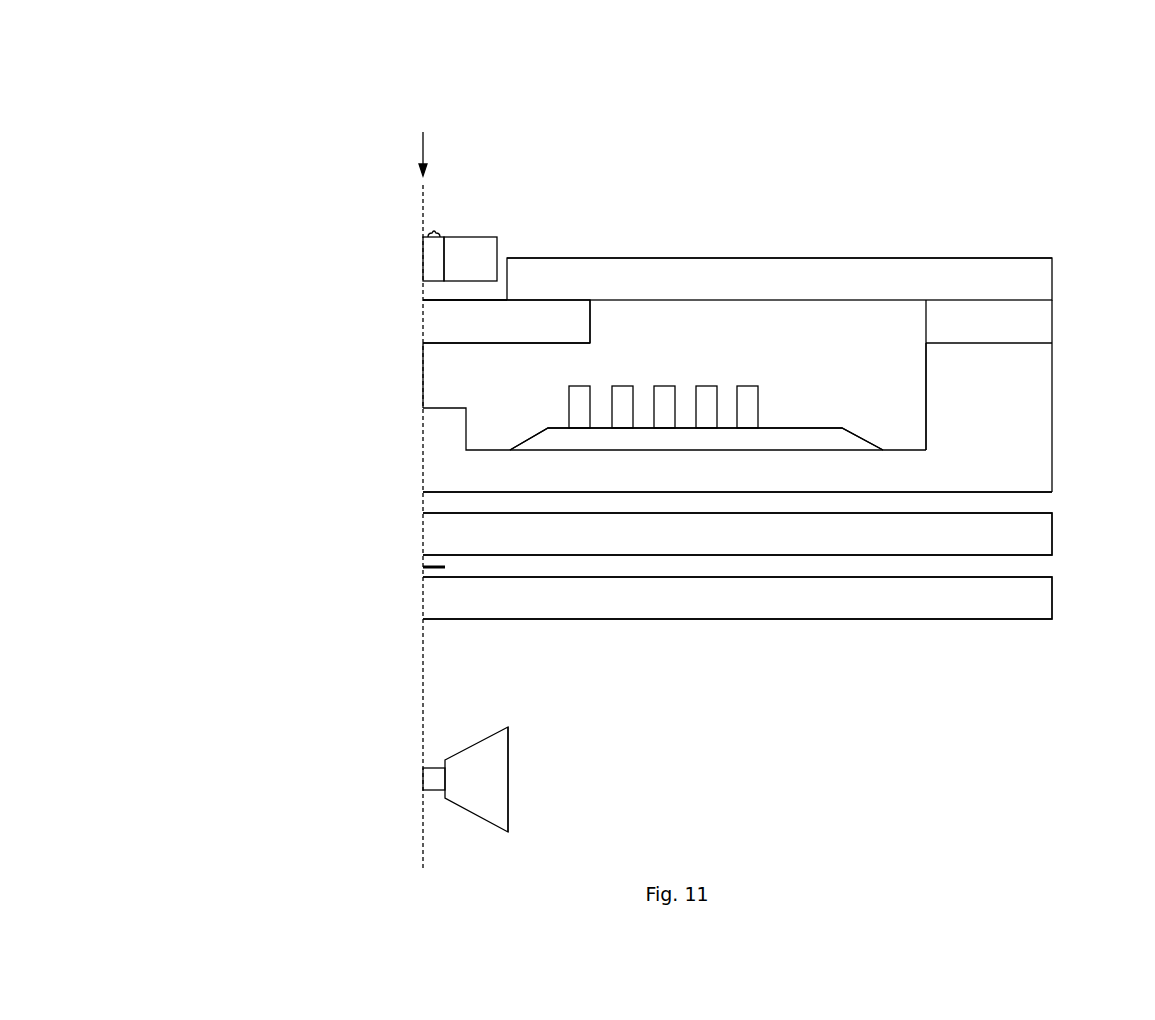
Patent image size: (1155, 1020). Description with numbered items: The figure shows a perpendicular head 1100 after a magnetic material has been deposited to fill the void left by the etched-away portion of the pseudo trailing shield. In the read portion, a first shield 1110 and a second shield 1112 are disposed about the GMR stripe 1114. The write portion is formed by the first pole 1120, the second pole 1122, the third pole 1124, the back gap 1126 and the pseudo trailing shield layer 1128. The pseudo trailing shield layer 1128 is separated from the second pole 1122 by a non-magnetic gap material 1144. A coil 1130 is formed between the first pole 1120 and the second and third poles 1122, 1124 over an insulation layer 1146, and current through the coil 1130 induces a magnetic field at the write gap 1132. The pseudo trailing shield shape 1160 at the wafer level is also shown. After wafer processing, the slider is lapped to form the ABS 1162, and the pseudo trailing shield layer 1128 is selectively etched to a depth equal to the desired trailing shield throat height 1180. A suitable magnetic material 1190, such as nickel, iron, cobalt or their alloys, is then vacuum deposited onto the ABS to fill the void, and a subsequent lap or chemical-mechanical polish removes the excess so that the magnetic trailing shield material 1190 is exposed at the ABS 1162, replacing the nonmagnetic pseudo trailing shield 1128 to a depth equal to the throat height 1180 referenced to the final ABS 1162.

The perpendicular head 1100 is at (297, 138).
The ABS 1162 is at (447, 118).
The magnetic material 1190 is at (423, 247).
The trailing shield throat height 1180 is at (443, 227).
The pseudo trailing shield layer 1128 is at (497, 248).
The pseudo trailing shield shape 1160 is at (538, 758).
The third pole 1124 is at (997, 258).
The non-magnetic gap material 1144 is at (434, 292).
The second pole 1122 is at (434, 312).
The write gap 1132 is at (434, 387).
The coil 1130 is at (727, 375).
The back gap 1126 is at (1032, 385).
The insulation layer 1146 is at (853, 438).
The first pole 1120 is at (1033, 470).
The second shield 1112 is at (1032, 523).
The first shield 1110 is at (1033, 587).
The GMR stripe 1114 is at (424, 573).